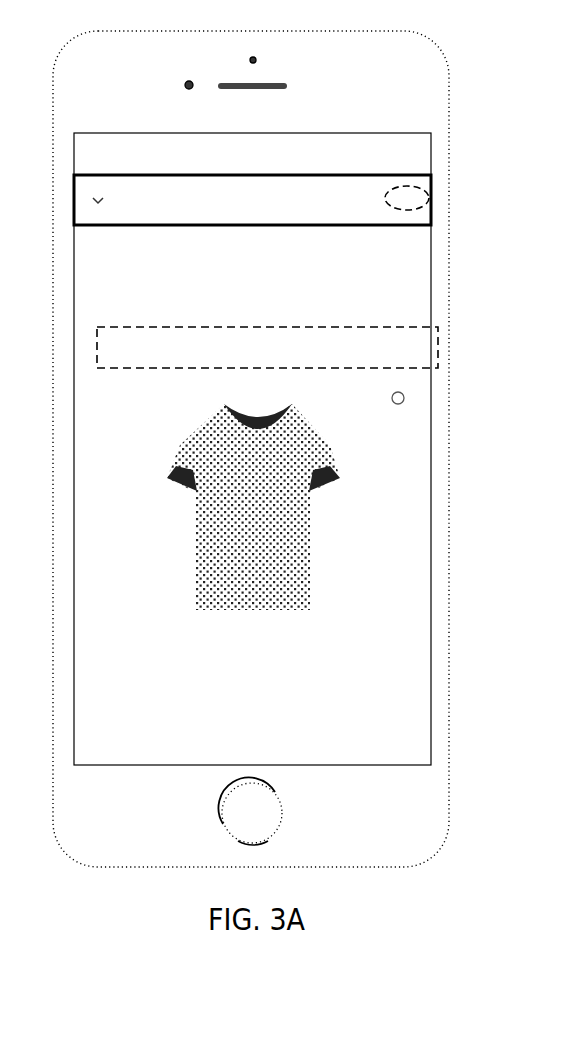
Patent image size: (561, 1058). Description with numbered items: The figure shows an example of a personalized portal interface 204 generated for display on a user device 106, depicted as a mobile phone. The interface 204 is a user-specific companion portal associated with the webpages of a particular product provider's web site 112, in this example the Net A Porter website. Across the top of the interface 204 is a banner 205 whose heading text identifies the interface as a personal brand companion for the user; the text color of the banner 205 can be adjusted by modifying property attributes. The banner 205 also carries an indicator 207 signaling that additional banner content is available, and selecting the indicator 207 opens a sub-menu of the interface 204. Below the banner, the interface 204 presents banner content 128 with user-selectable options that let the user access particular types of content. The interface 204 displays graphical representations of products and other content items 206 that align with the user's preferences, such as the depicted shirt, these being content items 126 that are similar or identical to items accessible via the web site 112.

The user device 106 is at (437, 52).
The web site 112 is at (412, 491).
The personalized portal interface 204 is at (430, 548).
The banner 205 is at (432, 174).
The indicator 207 is at (415, 208).
The banner content 128 is at (438, 335).
The content items 206 is at (305, 442).
The content items 126 is at (303, 588).